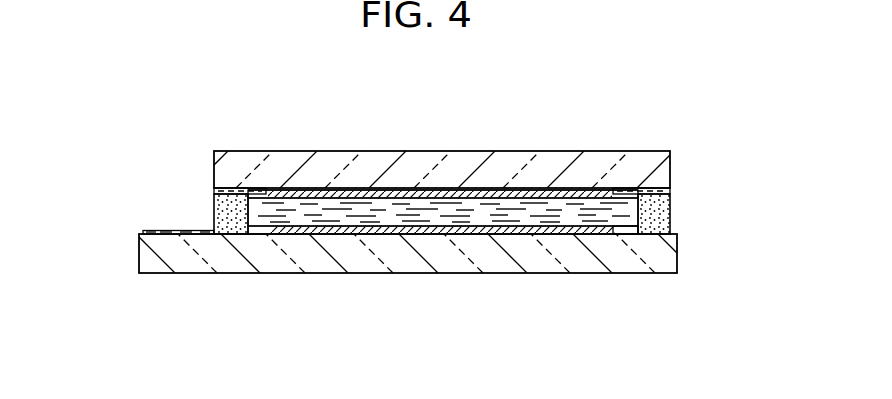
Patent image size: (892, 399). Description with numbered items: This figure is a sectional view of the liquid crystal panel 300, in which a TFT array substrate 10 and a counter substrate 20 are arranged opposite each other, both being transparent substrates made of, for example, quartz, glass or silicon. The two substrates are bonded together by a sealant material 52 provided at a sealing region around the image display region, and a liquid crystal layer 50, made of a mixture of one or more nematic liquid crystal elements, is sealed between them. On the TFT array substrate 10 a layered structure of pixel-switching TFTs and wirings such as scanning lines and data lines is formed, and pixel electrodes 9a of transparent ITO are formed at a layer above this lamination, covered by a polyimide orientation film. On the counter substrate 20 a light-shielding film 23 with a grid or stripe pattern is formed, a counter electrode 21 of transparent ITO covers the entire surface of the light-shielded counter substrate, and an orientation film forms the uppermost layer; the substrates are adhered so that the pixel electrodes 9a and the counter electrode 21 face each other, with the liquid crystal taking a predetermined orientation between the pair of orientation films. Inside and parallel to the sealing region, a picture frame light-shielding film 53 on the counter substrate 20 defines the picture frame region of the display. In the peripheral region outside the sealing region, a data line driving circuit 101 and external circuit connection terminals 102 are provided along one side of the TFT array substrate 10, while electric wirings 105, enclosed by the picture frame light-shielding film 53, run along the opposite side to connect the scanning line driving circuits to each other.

The liquid crystal panel 300 is at (670, 90).
The counter substrate 20 is at (338, 157).
The counter electrode 21 is at (433, 193).
The light-shielding film 23 is at (518, 190).
The picture frame light-shielding film 53 is at (261, 190).
The sealant material 52 is at (215, 200).
The liquid crystal layer 50 is at (457, 217).
The pixel electrodes 9a is at (300, 233).
The TFT array substrate 10 is at (538, 260).
The electric wirings 105 is at (618, 228).
The data line driving circuit 101 is at (192, 230).
The external circuit connection terminals 102 is at (155, 230).